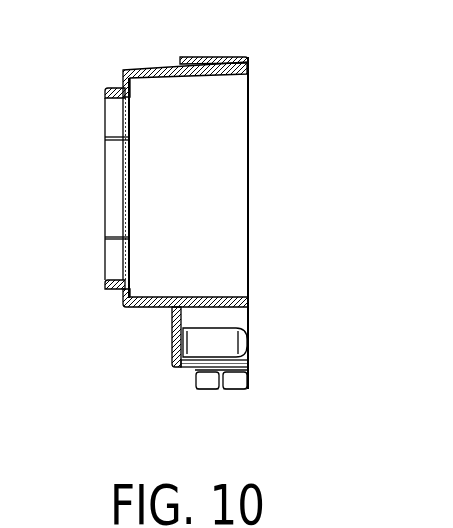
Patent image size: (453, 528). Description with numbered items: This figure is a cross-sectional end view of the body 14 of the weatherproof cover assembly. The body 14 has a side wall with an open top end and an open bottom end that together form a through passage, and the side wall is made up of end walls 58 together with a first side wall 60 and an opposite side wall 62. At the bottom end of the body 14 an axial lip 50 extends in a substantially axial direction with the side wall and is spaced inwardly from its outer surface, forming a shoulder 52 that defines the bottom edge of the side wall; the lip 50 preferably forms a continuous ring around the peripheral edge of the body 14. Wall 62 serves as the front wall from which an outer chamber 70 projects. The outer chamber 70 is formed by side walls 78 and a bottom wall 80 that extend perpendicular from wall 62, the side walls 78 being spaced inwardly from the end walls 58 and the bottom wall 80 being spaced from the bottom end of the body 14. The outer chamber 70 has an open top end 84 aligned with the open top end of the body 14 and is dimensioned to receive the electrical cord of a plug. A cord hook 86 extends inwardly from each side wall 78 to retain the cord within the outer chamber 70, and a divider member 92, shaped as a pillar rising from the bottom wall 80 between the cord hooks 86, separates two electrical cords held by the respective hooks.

The body 14 is at (90, 245).
The axial lip 50 is at (116, 90).
The shoulder 52 is at (121, 85).
The end wall 58 is at (232, 152).
The side wall 60 is at (152, 68).
The side wall 62 is at (147, 308).
The outer chamber 70 is at (207, 391).
The side wall 78 is at (212, 362).
The bottom wall 80 is at (173, 347).
The open top end 84 is at (250, 365).
The cord hook 86 is at (239, 391).
The divider member 92 is at (239, 344).